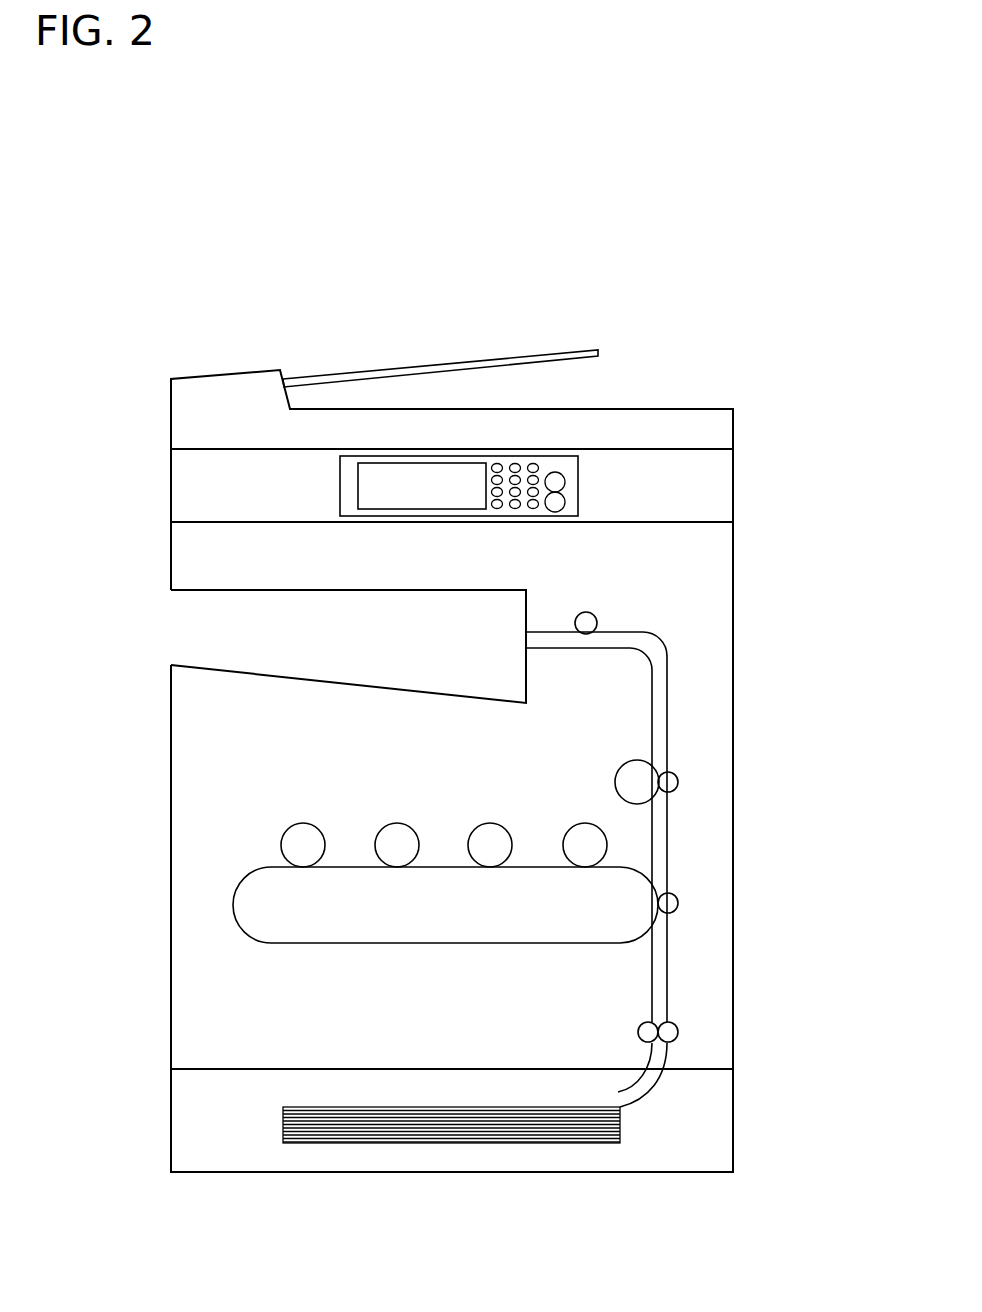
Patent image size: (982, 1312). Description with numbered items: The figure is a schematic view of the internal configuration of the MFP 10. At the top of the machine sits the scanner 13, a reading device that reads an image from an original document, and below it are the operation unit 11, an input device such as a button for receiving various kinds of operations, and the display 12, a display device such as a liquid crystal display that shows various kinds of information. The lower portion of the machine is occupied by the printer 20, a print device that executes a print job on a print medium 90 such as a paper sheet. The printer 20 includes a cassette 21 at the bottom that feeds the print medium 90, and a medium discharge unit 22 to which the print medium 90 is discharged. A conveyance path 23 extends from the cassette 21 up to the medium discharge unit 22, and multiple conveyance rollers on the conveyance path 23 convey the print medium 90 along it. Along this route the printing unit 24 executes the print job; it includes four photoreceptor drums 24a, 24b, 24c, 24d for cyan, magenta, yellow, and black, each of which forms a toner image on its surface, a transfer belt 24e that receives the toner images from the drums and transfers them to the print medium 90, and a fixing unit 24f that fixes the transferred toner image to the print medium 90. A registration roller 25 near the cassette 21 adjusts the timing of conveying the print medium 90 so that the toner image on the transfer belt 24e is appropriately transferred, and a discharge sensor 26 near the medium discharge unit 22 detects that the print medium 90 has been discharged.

The MFP 10 is at (626, 268).
The operation unit 11 is at (584, 490).
The display 12 is at (452, 473).
The scanner 13 is at (418, 343).
The printer 20 is at (461, 854).
The cassette 21 is at (655, 1109).
The medium discharge unit 22 is at (243, 647).
The conveyance path 23 is at (670, 853).
The printing unit 24 is at (452, 786).
The photoreceptor drum 24a is at (306, 833).
The photoreceptor drum 24b is at (388, 838).
The photoreceptor drum 24c is at (480, 840).
The photoreceptor drum 24d is at (575, 843).
The transfer belt 24e is at (243, 875).
The fixing unit 24f is at (643, 770).
The registration roller 25 is at (680, 1028).
The discharge sensor 26 is at (592, 620).
The print medium 90 is at (317, 1120).